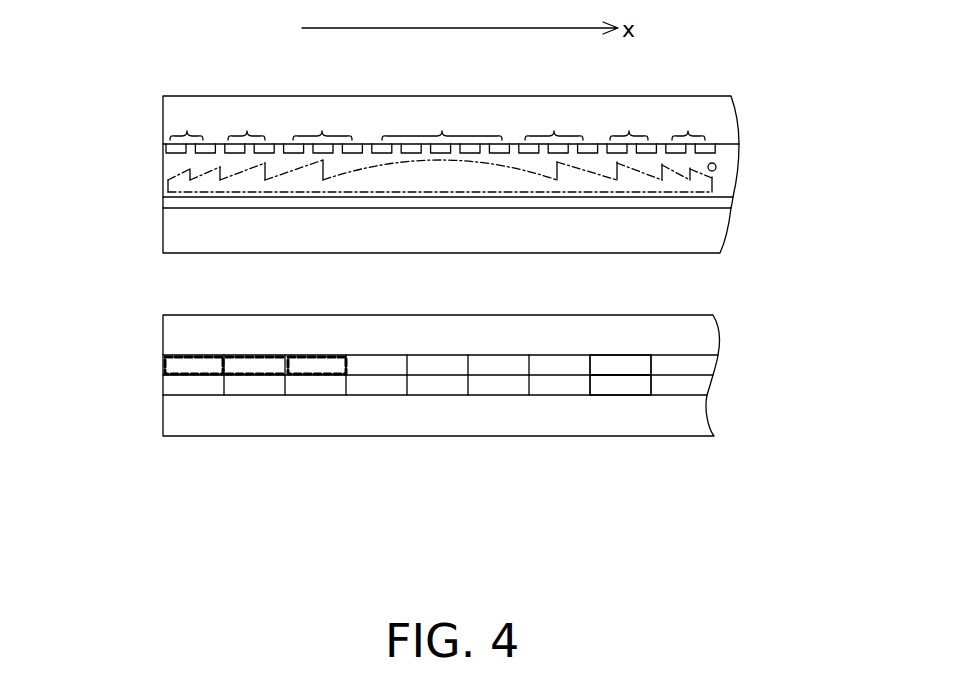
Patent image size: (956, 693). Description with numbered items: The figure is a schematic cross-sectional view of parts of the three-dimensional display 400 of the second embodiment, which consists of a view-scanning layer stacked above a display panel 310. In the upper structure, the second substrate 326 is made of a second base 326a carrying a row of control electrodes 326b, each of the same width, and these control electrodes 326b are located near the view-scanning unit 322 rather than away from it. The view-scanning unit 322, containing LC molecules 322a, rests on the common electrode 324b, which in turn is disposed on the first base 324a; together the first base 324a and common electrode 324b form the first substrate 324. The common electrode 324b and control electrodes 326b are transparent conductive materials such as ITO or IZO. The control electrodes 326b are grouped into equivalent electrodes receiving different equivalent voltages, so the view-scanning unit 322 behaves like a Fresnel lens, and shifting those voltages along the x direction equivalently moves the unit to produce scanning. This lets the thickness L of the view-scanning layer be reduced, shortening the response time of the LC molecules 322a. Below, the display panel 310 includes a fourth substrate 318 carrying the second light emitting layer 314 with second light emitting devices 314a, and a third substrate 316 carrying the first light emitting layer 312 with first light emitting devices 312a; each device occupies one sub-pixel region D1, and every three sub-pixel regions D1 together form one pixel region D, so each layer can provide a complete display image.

The 3D-display 400 is at (843, 578).
The second substrate 326 is at (813, 95).
The second base 326a is at (720, 107).
The control electrodes 326b is at (714, 150).
The view-scanning unit 322 is at (713, 188).
The LC molecules 322a is at (717, 167).
The first substrate 324 is at (82, 213).
The first base 324a is at (167, 237).
The common electrode 324b is at (163, 208).
The display panel 310 is at (812, 320).
The fourth substrate 318 is at (713, 348).
The second light emitting layer 314 is at (707, 362).
The second light emitting devices 314a is at (625, 365).
The first light emitting layer 312 is at (707, 387).
The first light emitting devices 312a is at (623, 387).
The third substrate 316 is at (707, 407).
The thickness L is at (158, 143).
The pixel region D is at (310, 377).
The sub-pixel regions D1 is at (183, 377).